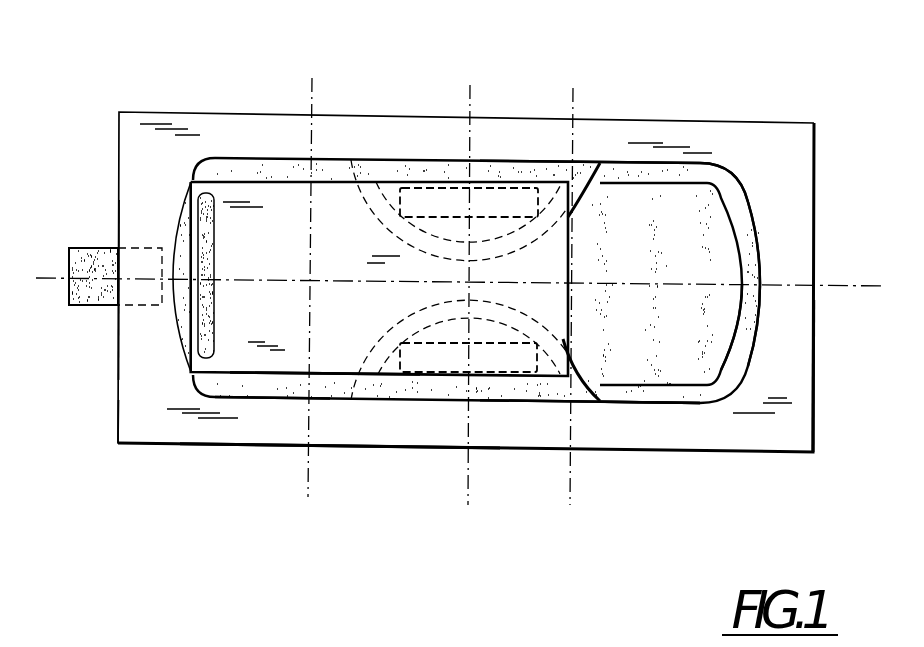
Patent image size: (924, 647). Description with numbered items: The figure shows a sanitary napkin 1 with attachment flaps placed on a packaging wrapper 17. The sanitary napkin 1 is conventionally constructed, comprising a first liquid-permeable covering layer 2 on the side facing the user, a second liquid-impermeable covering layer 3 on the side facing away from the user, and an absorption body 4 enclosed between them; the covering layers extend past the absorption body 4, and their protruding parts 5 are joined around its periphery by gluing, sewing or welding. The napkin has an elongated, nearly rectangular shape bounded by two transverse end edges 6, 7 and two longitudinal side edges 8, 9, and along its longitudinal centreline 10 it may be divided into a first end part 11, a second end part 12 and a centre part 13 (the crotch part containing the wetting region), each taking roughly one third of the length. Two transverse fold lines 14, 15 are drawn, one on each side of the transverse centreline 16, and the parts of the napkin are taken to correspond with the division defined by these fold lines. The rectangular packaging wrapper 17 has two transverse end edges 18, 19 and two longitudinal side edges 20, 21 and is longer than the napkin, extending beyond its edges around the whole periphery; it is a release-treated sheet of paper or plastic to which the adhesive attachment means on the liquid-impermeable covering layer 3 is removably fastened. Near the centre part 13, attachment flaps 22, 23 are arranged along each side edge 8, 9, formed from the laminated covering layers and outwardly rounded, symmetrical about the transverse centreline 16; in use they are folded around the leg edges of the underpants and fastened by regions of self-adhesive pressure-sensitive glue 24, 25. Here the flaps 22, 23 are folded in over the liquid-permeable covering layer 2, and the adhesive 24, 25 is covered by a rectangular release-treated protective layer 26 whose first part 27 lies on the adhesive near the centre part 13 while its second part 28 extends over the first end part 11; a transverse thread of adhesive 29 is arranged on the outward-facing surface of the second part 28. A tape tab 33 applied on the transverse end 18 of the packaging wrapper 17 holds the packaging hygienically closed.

The sanitary napkin 1 is at (648, 200).
The first liquid-permeable covering layer 2 is at (720, 213).
The second liquid-impermeable covering layer 3 is at (757, 228).
The absorption body 4 is at (708, 385).
The protruding parts of the covering layers 5 is at (658, 396).
The transverse end edge 6 is at (760, 323).
The transverse end edge 7 is at (182, 222).
The longitudinal side edge 8 is at (237, 157).
The longitudinal side edge 9 is at (255, 398).
The longitudinal centreline 10 is at (823, 287).
The first end part 11 is at (289, 376).
The second end part 12 is at (720, 340).
The centre part 13 is at (330, 350).
The transverse fold line 14 is at (573, 105).
The transverse fold line 15 is at (312, 83).
The transverse centreline 16 is at (470, 110).
The packaging wrapper 17 is at (148, 422).
The transverse end edge of packaging wrapper 18 is at (117, 400).
The transverse end edge of packaging wrapper 19 is at (813, 376).
The longitudinal side edge of packaging wrapper 20 is at (165, 112).
The longitudinal side edge of packaging wrapper 21 is at (193, 447).
The attachment flap 22 is at (540, 168).
The attachment flap 23 is at (547, 394).
The region of self-adhesive pressure-sensitive glue 24 is at (430, 200).
The region of self-adhesive pressure-sensitive glue 25 is at (442, 360).
The protective layer 26 is at (332, 195).
The first part of protective layer 27 is at (339, 256).
The second part of protective layer 28 is at (276, 257).
The transverse thread of adhesive 29 is at (205, 195).
The tape tab 33 is at (97, 303).